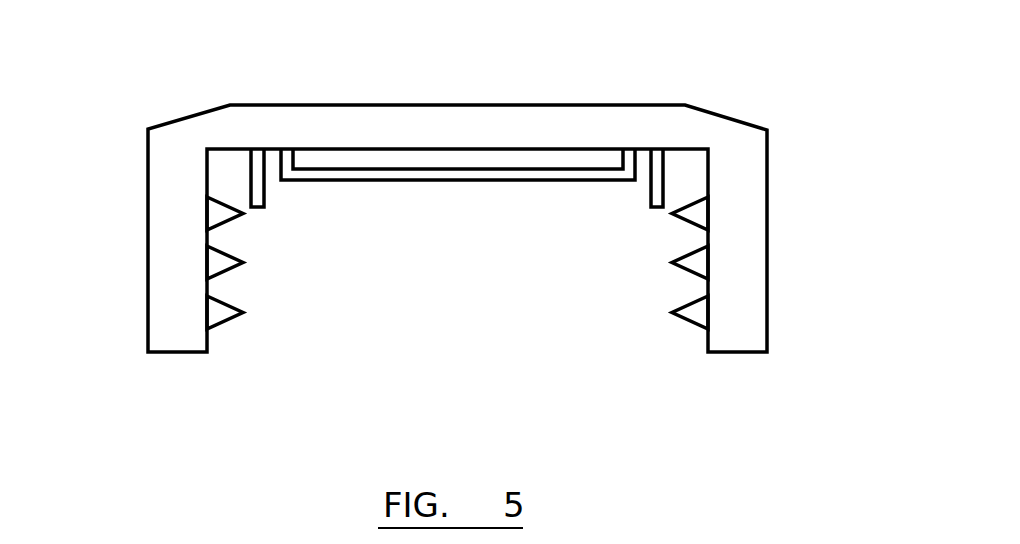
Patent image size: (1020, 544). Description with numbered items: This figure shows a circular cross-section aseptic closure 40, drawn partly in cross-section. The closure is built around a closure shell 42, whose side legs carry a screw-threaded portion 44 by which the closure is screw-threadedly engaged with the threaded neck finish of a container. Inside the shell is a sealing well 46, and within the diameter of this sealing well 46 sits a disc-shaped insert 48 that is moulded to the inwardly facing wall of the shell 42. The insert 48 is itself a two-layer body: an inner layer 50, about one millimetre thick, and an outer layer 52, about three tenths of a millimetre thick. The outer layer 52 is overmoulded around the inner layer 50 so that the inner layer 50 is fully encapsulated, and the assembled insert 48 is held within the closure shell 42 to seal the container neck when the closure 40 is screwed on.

The aseptic closure 40 is at (846, 40).
The closure shell 42 is at (742, 228).
The screw-threaded portion 44 is at (232, 150).
The sealing well 46 is at (665, 175).
The disc-shaped insert 48 is at (458, 229).
The inner layer 50 is at (396, 158).
The outer layer 52 is at (513, 175).